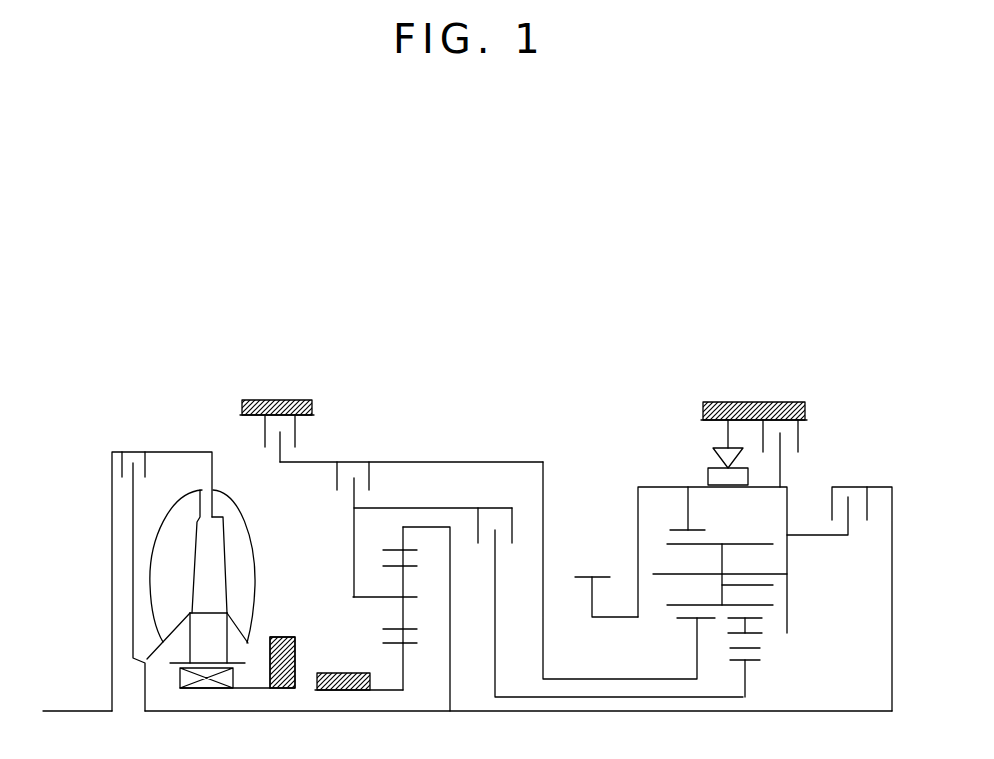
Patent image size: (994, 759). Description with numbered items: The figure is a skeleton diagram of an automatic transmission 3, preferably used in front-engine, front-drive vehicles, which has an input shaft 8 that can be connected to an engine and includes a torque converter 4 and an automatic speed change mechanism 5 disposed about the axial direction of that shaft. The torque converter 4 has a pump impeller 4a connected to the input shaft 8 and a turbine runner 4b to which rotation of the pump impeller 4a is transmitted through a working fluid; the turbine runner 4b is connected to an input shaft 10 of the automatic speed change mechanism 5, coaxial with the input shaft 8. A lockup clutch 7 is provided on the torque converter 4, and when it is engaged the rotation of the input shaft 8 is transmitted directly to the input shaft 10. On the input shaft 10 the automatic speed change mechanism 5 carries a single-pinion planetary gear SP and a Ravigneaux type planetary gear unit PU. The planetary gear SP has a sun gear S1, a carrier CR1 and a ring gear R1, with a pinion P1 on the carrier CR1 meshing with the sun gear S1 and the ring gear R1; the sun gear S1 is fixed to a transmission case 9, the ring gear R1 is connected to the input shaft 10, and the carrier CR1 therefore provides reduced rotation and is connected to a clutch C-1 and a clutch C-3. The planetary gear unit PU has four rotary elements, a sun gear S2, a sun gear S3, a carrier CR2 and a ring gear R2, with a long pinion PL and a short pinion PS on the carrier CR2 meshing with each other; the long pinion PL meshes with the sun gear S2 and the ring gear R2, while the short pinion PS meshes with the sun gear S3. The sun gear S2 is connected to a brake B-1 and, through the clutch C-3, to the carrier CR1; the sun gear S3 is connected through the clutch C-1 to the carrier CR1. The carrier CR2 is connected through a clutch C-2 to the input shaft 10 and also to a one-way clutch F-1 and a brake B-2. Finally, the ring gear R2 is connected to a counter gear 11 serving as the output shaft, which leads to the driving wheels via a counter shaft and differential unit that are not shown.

The automatic transmission 3 is at (463, 412).
The torque converter 4 is at (211, 543).
The pump impeller 4a is at (235, 518).
The turbine runner 4b is at (192, 502).
The automatic speed change mechanism 5 is at (549, 461).
The lockup clutch 7 is at (145, 452).
The input shaft 8 is at (85, 708).
The transmission case 9 is at (305, 417).
The input shaft 10 is at (253, 713).
The counter gear 11 is at (600, 577).
The brake B-1 is at (299, 438).
The brake B-2 is at (804, 453).
The clutch C-1 is at (610, 590).
The clutch C-2 is at (839, 585).
The clutch C-3 is at (360, 517).
The one-way clutch F-1 is at (705, 452).
The single-pinion planetary gear SP is at (368, 560).
The Ravigneaux type planetary gear unit PU is at (730, 562).
The ring gear R1 is at (407, 550).
The pinion P1 is at (387, 566).
The carrier CR1 is at (352, 585).
The sun gear S1 is at (413, 644).
The ring gear R2 is at (697, 532).
The long pinion PL is at (689, 598).
The carrier CR2 is at (787, 597).
The short pinion PS is at (748, 618).
The sun gear S2 is at (687, 619).
The sun gear S3 is at (748, 662).